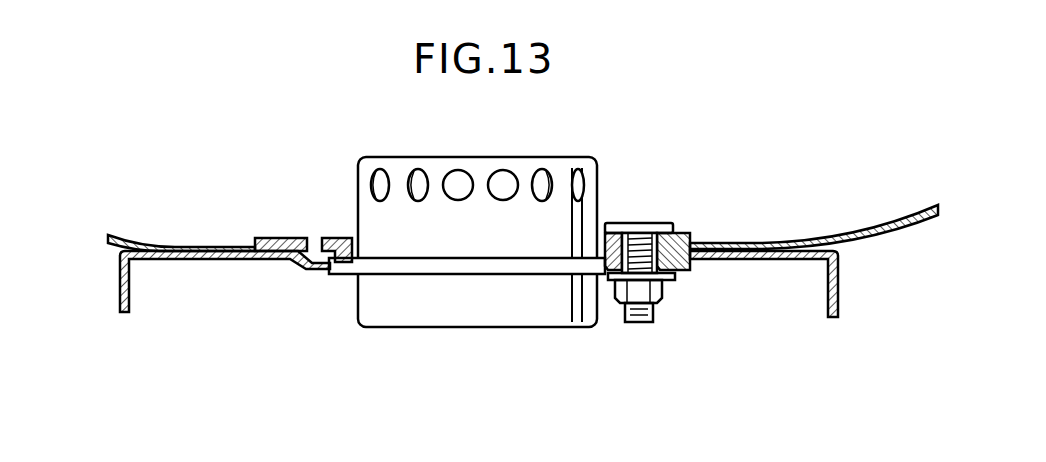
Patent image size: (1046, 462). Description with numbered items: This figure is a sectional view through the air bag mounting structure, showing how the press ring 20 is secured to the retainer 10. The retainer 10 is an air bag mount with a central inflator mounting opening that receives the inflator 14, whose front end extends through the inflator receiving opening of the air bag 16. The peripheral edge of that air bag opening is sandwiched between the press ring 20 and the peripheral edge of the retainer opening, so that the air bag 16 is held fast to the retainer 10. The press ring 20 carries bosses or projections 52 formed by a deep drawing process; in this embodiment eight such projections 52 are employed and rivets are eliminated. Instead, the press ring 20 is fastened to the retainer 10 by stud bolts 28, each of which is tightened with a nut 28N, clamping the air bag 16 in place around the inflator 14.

The retainer 10 is at (178, 262).
The inflator 14 is at (455, 326).
The air bag 16 is at (893, 240).
The press ring 20 is at (690, 236).
The stud bolt 28 is at (633, 222).
The nut 28N is at (666, 292).
The projection 52 is at (300, 269).